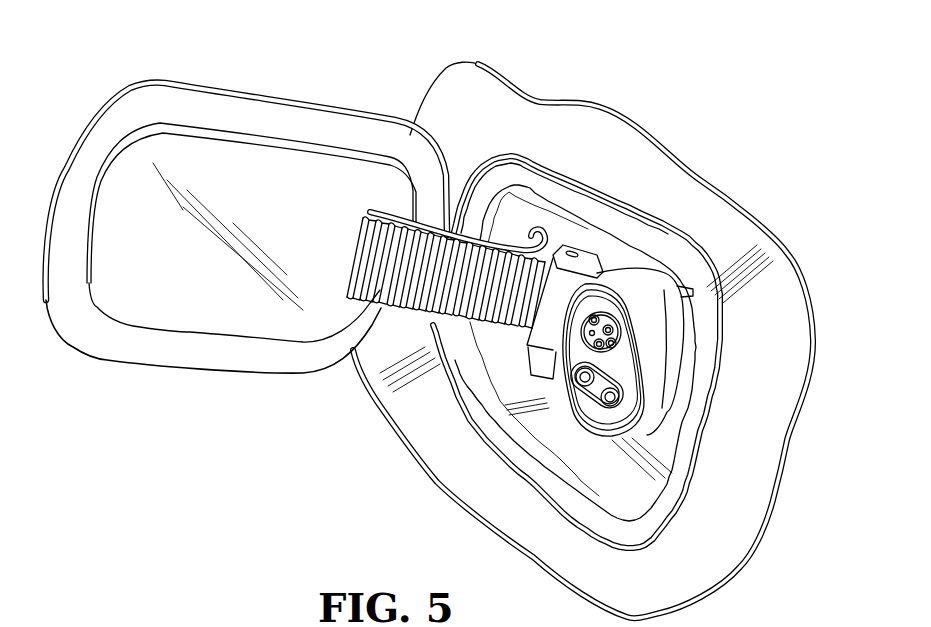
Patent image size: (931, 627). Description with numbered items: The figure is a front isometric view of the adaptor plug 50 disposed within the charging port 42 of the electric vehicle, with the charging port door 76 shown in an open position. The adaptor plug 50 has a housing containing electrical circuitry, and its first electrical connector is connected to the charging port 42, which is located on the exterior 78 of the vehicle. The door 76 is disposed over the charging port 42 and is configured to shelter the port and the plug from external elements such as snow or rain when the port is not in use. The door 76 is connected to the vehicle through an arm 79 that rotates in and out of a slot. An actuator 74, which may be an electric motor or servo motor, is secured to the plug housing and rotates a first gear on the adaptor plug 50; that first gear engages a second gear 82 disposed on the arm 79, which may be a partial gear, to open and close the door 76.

The charging port 42 is at (670, 417).
The adaptor plug 50 is at (639, 276).
The actuator 74 is at (540, 373).
The door 76 is at (201, 110).
The exterior 78 is at (676, 204).
The arm 79 is at (427, 231).
The second gear 82 is at (393, 312).